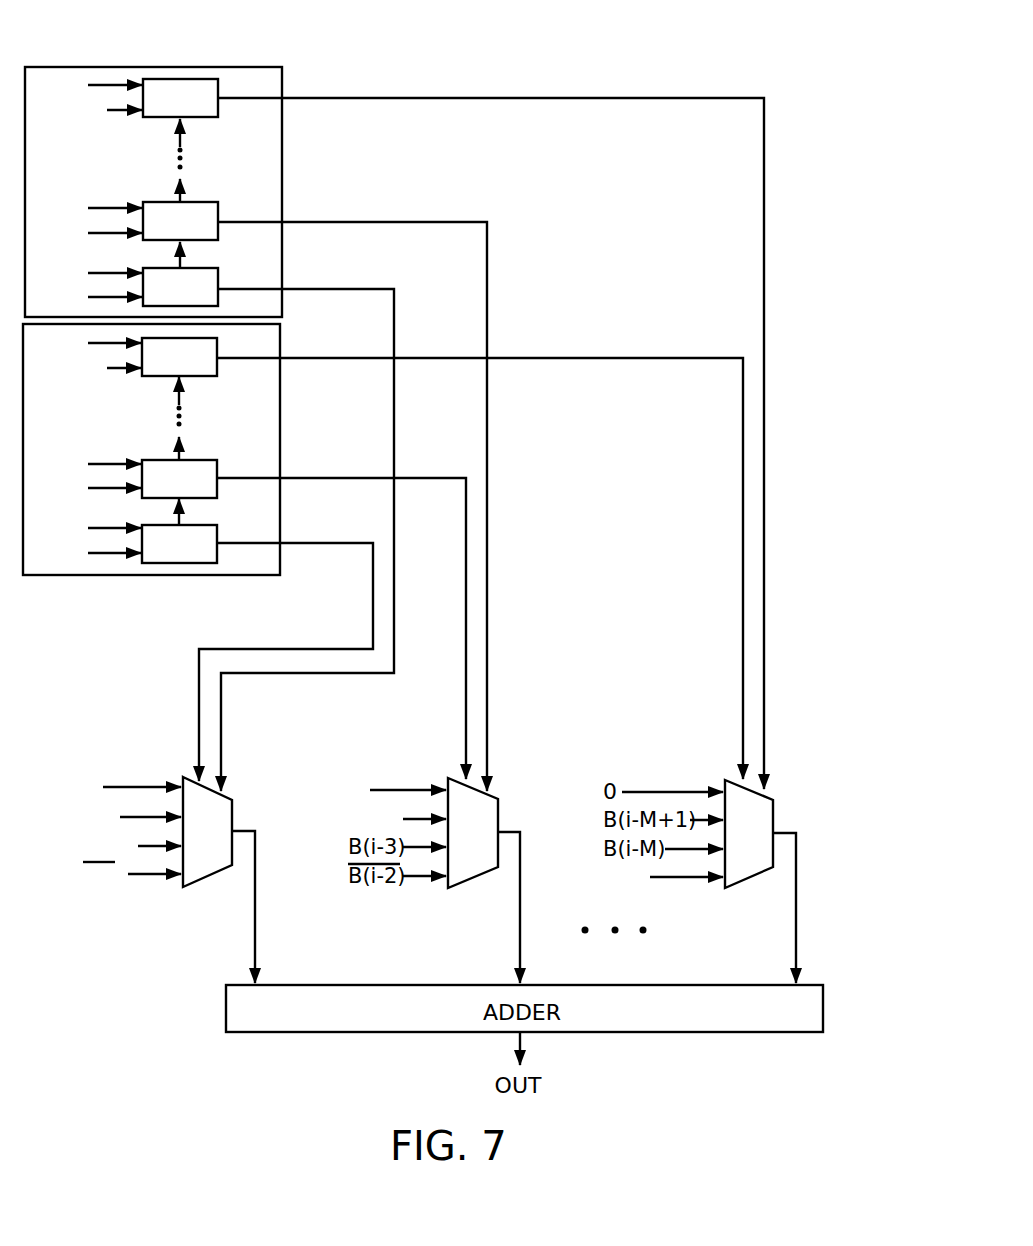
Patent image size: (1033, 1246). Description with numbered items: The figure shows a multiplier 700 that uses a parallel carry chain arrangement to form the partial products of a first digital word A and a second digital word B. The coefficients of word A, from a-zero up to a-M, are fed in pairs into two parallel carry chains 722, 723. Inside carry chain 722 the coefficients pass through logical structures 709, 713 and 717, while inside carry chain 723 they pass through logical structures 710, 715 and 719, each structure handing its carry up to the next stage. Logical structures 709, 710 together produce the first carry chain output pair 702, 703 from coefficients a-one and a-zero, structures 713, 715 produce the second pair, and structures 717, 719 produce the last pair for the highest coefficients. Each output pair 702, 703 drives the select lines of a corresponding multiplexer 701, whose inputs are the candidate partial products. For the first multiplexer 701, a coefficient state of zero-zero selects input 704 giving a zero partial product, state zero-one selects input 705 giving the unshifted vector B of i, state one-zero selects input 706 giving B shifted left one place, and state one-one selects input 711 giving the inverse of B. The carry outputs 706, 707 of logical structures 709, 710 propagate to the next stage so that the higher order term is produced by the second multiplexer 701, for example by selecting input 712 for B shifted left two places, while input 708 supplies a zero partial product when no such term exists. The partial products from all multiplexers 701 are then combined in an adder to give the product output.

The multiplier 700 is at (724, 44).
The multiplexer 701 is at (212, 864).
The carry chain output 702 is at (741, 752).
The carry chain output 703 is at (223, 716).
The multiplexer input 704 is at (80, 787).
The multiplexer input 705 is at (78, 818).
The carry output 706 is at (184, 518).
The carry output 707 is at (185, 260).
The multiplexer input 708 is at (345, 791).
The logical structure 709 is at (162, 556).
The logical structure 710 is at (163, 299).
The multiplexer input 711 is at (80, 872).
The multiplexer input 712 is at (344, 820).
The logical structure 713 is at (162, 491).
The logical structure 715 is at (163, 233).
The logical structure 717 is at (162, 369).
The logical structure 719 is at (163, 110).
The parallel carry chain 722 is at (260, 426).
The parallel carry chain 723 is at (262, 169).